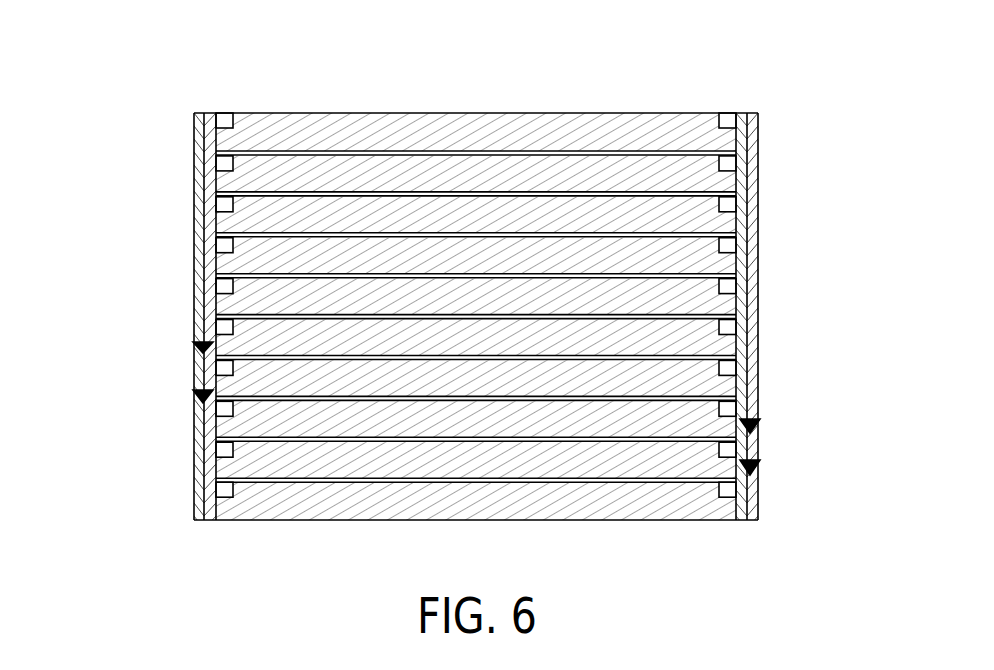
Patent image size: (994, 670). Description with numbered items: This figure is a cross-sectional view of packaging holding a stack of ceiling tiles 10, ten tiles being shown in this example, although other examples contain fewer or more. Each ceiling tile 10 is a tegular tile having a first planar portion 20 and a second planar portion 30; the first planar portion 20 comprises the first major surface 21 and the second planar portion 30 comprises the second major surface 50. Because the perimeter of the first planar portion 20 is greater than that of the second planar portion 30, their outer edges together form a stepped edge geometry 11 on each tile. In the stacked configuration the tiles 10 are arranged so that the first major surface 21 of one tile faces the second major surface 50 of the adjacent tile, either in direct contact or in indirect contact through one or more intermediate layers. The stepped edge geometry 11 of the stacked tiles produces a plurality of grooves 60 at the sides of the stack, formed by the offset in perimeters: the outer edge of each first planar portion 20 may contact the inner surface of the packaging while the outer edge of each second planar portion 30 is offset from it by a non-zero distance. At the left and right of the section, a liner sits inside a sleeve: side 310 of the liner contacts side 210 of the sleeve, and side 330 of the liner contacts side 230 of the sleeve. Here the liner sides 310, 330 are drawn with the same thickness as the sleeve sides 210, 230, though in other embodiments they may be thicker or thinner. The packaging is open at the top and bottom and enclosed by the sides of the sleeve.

The ceiling tile 10 is at (373, 143).
The stepped edge geometry 11 is at (200, 348).
The first planar portion 20 is at (305, 143).
The first major surface 21 is at (663, 153).
The second planar portion 30 is at (298, 117).
The second major surface 50 is at (502, 114).
The groove 60 is at (222, 325).
The side of sleeve 210 is at (753, 150).
The side of sleeve 230 is at (193, 158).
The side of liner 310 is at (742, 115).
The side of liner 330 is at (221, 113).